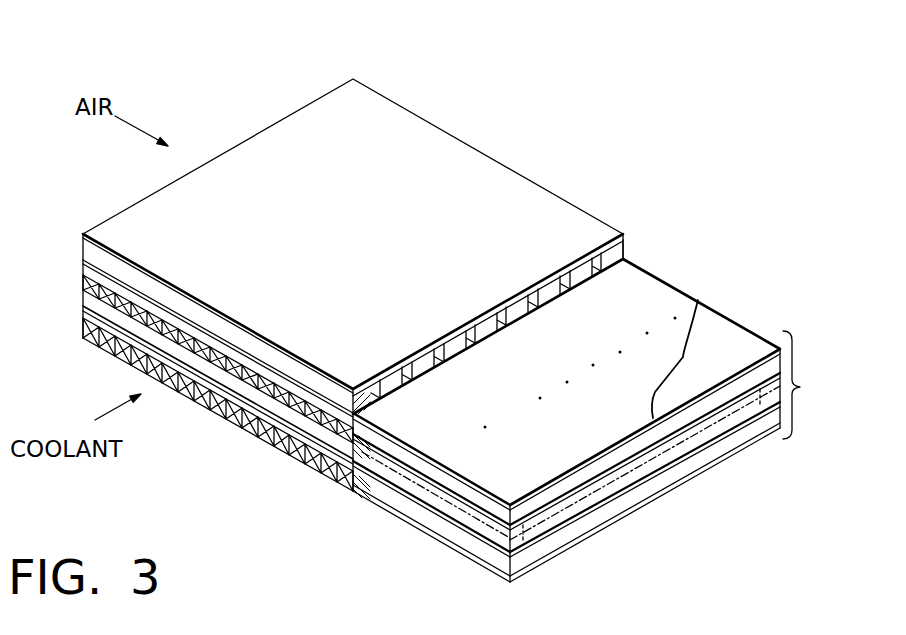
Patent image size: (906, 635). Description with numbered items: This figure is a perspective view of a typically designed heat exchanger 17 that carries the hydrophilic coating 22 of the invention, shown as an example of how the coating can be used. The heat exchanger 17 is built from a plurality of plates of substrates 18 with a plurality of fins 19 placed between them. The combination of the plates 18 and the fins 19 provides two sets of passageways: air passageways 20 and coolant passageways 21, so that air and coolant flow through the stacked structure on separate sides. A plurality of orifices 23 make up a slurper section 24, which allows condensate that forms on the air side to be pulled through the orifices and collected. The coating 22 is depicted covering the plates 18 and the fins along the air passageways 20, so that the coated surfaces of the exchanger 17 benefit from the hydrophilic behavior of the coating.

The heat exchanger 17 is at (432, 313).
The plates of substrates 18 is at (452, 170).
The fins 19 is at (82, 271).
The air passageways 20 is at (477, 329).
The coolant passageways 21 is at (247, 416).
The coating 22 is at (618, 320).
The orifices 23 is at (511, 413).
The slurper section 24 is at (810, 385).